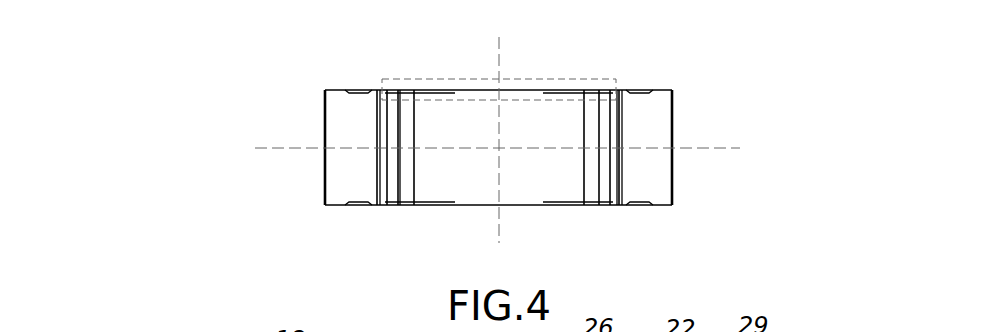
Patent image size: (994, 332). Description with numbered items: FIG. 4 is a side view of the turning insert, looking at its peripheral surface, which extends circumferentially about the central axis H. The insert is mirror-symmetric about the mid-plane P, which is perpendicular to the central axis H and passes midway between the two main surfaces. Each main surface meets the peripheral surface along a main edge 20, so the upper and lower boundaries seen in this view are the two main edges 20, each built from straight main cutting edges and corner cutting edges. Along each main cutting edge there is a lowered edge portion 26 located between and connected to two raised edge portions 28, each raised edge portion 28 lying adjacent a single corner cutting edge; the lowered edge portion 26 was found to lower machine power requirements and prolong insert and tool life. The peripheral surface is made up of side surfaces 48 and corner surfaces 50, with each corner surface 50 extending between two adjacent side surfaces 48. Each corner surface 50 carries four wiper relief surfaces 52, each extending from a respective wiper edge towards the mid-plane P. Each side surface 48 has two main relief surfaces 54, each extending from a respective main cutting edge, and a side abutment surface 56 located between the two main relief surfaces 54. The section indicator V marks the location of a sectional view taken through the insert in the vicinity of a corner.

The main edge 20 is at (322, 86).
The wiper relief surface 52 is at (408, 98).
The lowered edge portion 26 is at (510, 90).
The raised edge portion 28 is at (592, 90).
The corner surface 50 is at (606, 126).
The side surface 48 is at (515, 120).
The main relief surface 54 is at (470, 97).
The side abutment surface 56 is at (538, 153).
The central axis H is at (500, 50).
The section V is at (611, 27).
The mid-plane P is at (725, 140).